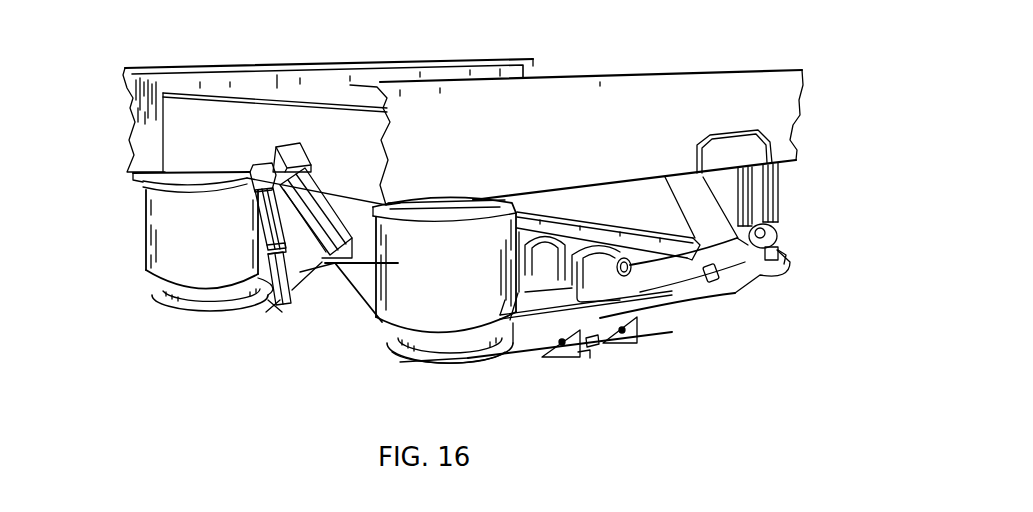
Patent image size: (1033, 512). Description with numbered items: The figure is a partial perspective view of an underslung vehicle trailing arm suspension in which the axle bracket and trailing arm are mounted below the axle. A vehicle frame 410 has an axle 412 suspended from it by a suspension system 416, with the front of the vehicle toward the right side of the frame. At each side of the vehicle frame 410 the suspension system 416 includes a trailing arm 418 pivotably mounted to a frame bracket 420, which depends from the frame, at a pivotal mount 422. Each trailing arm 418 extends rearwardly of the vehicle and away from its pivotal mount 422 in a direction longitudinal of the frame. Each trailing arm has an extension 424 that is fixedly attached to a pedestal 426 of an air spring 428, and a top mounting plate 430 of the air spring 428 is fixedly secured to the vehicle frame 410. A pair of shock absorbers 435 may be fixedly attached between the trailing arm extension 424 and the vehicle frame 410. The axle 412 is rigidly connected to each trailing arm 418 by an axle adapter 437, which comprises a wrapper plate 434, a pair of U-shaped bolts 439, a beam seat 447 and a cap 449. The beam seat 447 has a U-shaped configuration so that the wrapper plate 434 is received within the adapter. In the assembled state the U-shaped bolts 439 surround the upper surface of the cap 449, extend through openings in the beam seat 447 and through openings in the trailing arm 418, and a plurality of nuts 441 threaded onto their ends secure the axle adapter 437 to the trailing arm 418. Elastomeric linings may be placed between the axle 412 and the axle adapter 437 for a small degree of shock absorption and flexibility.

The vehicle frame 410 is at (738, 82).
The axle 412 is at (623, 262).
The suspension system 416 is at (755, 322).
The trailing arm 418 is at (657, 320).
The frame bracket 420 is at (768, 190).
The pivotal mount 422 is at (777, 250).
The extension 424 is at (217, 312).
The pedestal 426 is at (190, 293).
The air spring 428 is at (172, 215).
The top mounting plate 430 is at (167, 190).
The wrapper plate 434 is at (603, 352).
The shock absorbers 435 is at (233, 177).
The axle adapter 437 is at (600, 237).
The U-shaped bolts 439 is at (573, 253).
The nuts 441 is at (597, 340).
The beam seat 447 is at (640, 350).
The cap 449 is at (553, 247).